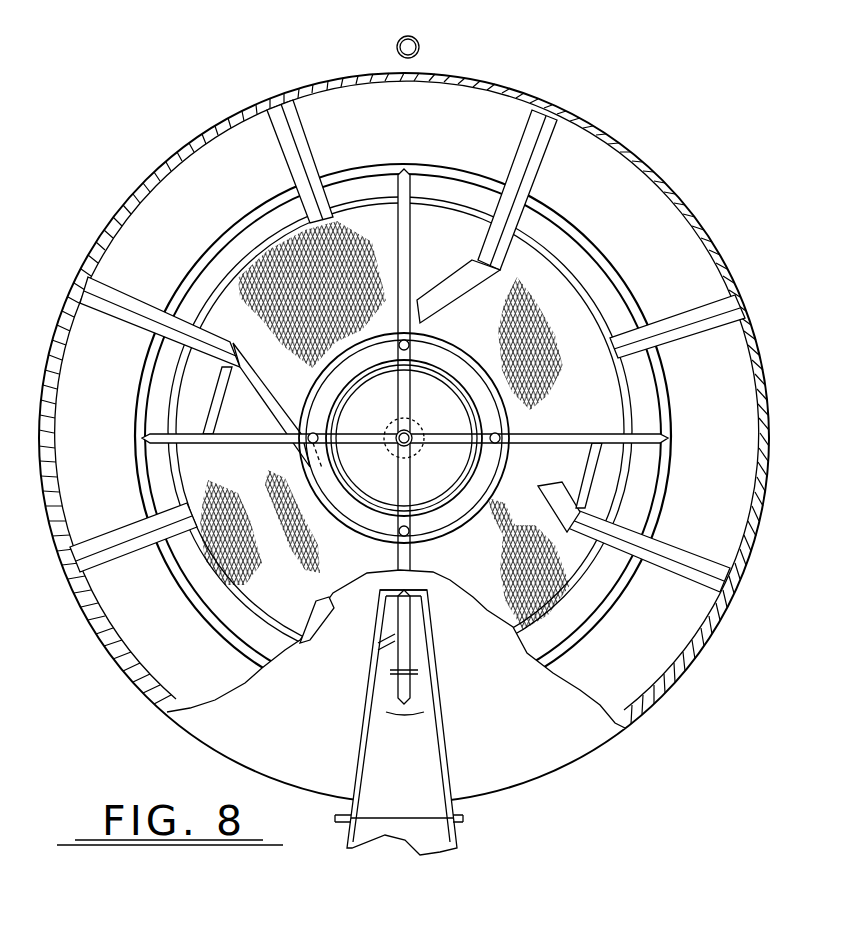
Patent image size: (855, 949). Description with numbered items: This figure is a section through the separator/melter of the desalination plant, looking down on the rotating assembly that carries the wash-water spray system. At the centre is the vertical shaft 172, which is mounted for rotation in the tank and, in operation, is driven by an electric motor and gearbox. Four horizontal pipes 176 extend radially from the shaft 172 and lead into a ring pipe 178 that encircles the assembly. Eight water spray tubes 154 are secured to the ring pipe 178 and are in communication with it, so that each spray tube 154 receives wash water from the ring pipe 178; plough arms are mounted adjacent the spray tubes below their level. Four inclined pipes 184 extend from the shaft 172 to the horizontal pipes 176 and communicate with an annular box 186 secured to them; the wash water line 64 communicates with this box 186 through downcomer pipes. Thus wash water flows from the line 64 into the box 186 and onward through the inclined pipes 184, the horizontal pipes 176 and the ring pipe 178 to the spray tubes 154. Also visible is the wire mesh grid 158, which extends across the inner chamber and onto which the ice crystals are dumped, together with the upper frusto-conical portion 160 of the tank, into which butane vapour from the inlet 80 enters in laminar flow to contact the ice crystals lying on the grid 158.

The wash water line 64 is at (420, 42).
The inlet 80 is at (437, 834).
The water spray tubes 154 is at (140, 318).
The wire mesh grid 158 is at (306, 602).
The upper frusto-conical portion 160 is at (330, 731).
The vertical shaft 172 is at (408, 446).
The horizontal pipes 176 is at (173, 438).
The ring pipe 178 is at (667, 452).
The inclined pipes 184 is at (404, 372).
The annular box 186 is at (428, 330).